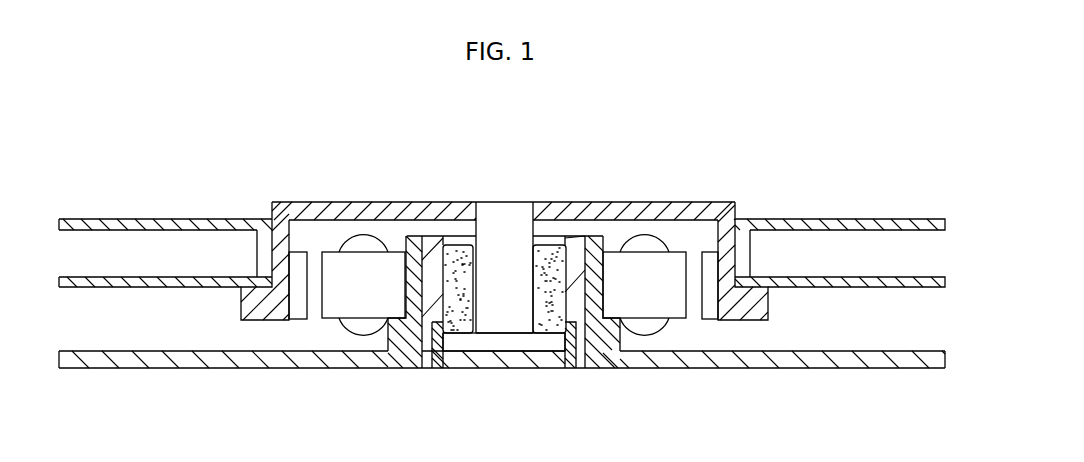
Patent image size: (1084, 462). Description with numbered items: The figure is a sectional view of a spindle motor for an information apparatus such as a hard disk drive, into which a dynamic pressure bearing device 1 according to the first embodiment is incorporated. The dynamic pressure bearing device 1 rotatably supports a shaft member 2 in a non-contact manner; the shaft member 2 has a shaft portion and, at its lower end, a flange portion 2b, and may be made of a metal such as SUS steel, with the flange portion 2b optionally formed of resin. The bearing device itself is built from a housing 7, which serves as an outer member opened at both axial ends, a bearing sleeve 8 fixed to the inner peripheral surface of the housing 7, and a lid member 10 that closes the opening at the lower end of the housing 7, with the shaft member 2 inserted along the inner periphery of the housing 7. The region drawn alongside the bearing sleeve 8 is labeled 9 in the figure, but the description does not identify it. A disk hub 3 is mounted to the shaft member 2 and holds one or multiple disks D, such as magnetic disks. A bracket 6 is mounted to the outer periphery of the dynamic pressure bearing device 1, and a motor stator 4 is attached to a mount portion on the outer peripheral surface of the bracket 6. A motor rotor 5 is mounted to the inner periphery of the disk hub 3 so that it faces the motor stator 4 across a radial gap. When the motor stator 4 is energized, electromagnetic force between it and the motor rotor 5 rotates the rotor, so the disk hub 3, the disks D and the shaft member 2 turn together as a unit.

The dynamic pressure bearing device 1 is at (570, 233).
The shaft member 2 is at (512, 200).
The flange portion 2b is at (476, 343).
The disk hub 3 is at (710, 207).
The motor stator 4 is at (678, 312).
The motor rotor 5 is at (713, 310).
The bracket 6 is at (604, 358).
The housing 7 is at (430, 243).
The bearing sleeve 8 is at (547, 253).
The magnet 9 is at (462, 243).
The lid member 10 is at (532, 352).
The disk D is at (857, 222).